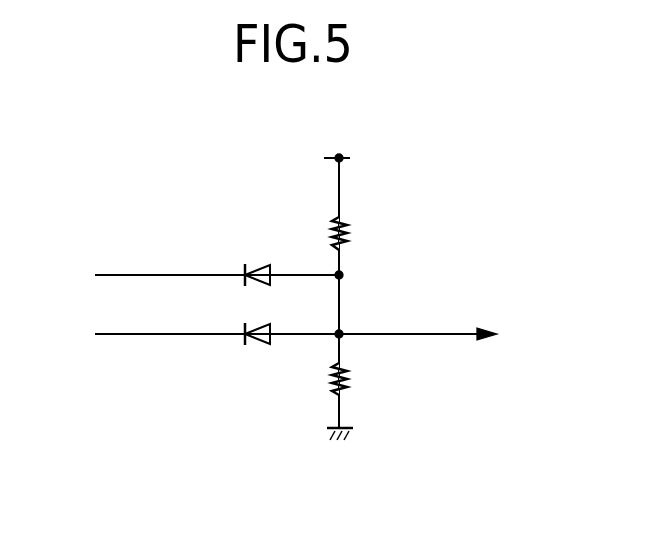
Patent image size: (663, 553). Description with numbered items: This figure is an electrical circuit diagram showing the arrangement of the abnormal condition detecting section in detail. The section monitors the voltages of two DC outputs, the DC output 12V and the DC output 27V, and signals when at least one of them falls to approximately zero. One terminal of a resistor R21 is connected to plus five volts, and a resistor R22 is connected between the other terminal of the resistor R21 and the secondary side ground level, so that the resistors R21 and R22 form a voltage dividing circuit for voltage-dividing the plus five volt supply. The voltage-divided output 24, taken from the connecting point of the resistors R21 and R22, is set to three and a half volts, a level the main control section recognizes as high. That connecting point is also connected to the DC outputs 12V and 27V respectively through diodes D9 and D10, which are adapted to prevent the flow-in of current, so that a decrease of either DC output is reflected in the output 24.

The DC output 12V is at (145, 275).
The DC output 27V is at (143, 334).
The diode D9 is at (290, 259).
The diode D10 is at (285, 353).
The resistor R21 is at (370, 233).
The resistor R22 is at (370, 380).
The output 24 is at (450, 333).